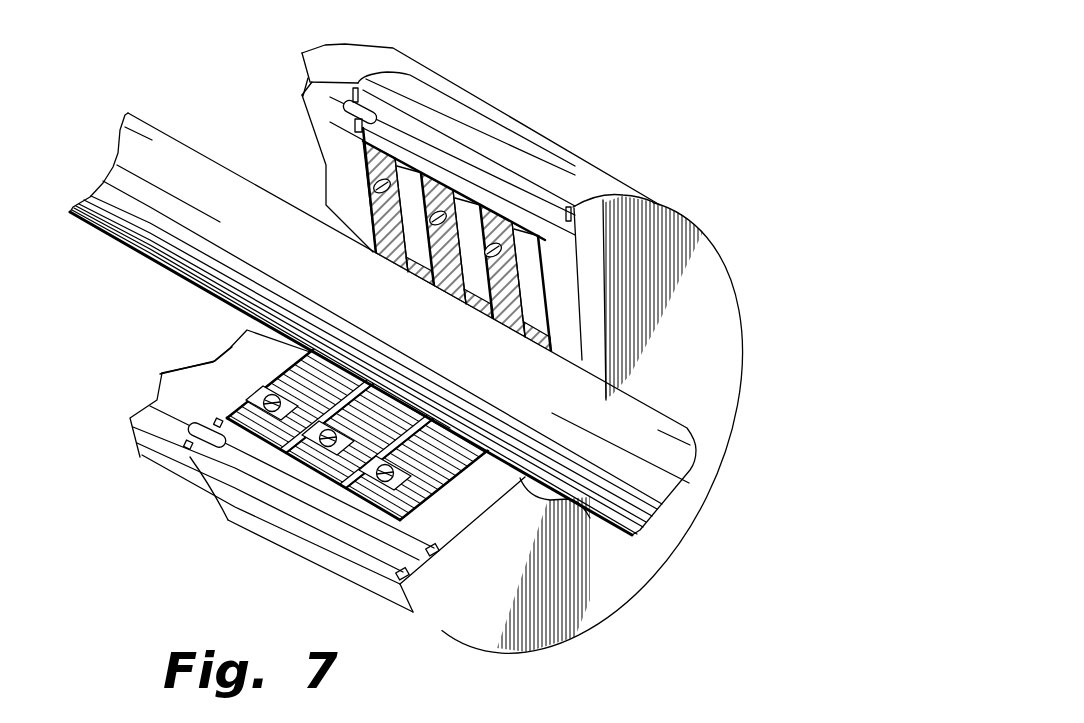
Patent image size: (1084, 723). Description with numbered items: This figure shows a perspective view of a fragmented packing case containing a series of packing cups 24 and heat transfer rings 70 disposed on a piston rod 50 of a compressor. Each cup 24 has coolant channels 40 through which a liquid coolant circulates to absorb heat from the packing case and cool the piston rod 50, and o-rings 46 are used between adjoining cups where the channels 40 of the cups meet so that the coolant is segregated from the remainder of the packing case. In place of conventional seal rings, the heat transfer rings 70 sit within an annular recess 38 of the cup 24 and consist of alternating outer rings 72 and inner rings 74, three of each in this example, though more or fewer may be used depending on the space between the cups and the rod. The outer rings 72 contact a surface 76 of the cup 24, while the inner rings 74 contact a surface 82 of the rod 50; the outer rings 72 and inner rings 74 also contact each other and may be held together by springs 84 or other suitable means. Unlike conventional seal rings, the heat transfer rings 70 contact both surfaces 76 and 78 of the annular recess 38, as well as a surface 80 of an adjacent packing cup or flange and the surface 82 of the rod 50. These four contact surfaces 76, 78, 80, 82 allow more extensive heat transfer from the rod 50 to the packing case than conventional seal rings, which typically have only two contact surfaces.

The cup 24 is at (410, 62).
The annular recess 38 is at (596, 198).
The coolant channels 40 is at (458, 168).
The o-rings 46 is at (433, 553).
The piston rod 50 is at (678, 473).
The heat transfer rings 70 is at (332, 492).
The outer rings 72 is at (460, 205).
The inner rings 74 is at (447, 289).
The surface 76 is at (533, 188).
The surface 78 is at (545, 297).
The surface 80 is at (362, 178).
The surface 82 is at (482, 303).
The springs 84 is at (250, 393).